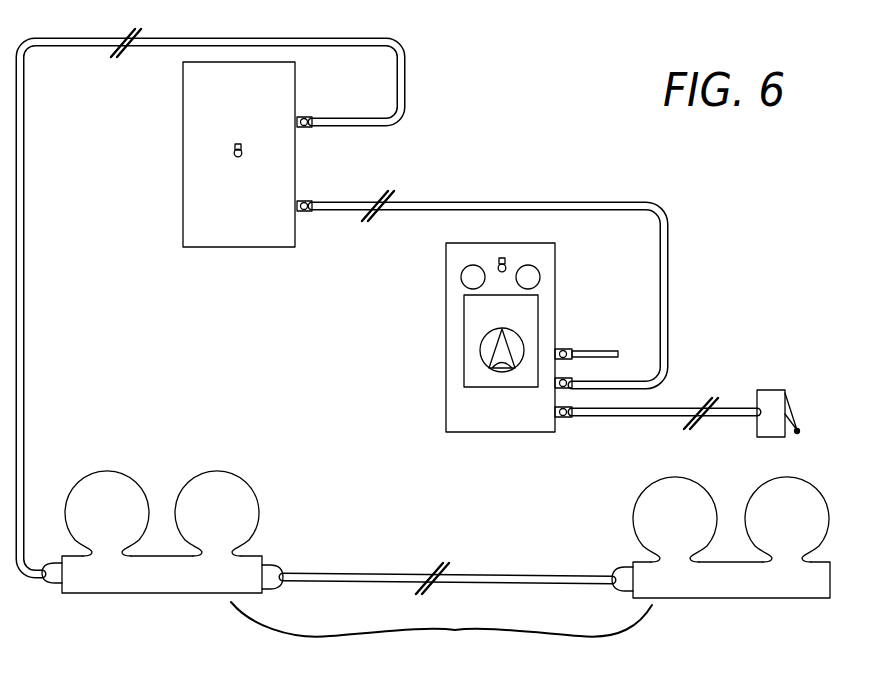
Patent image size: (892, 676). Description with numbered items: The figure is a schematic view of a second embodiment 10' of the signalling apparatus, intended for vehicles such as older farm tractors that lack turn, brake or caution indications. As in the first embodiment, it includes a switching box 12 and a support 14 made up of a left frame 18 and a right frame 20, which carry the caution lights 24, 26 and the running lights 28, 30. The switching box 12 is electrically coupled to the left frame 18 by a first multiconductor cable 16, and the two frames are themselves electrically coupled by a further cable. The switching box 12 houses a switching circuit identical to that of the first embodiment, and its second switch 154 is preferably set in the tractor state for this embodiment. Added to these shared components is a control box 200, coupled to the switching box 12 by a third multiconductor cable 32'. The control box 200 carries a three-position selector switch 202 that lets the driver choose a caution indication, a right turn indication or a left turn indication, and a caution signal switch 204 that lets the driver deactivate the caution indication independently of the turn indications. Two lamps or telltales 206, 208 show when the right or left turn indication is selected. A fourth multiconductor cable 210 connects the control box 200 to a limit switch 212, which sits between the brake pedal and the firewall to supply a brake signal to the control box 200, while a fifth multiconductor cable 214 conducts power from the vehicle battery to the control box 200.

The signalling apparatus embodiment 10' is at (497, 131).
The switching box 12 is at (195, 197).
The support 14 is at (441, 634).
The first multiconductor cable 16 is at (20, 312).
The left frame 18 is at (153, 575).
The right frame 20 is at (760, 578).
The caution light 24 is at (815, 510).
The caution light 26 is at (108, 487).
The running light 28 is at (652, 503).
The running light 30 is at (218, 487).
The third multiconductor cable 32' is at (488, 265).
The second switch 154 is at (233, 152).
The control box 200 is at (455, 327).
The three-position selector switch 202 is at (487, 348).
The caution signal switch 204 is at (500, 258).
The telltale 206 is at (460, 275).
The telltale 208 is at (541, 281).
The fourth multiconductor cable 210 is at (690, 408).
The limit switch 212 is at (771, 398).
The fifth multiconductor cable 214 is at (596, 351).